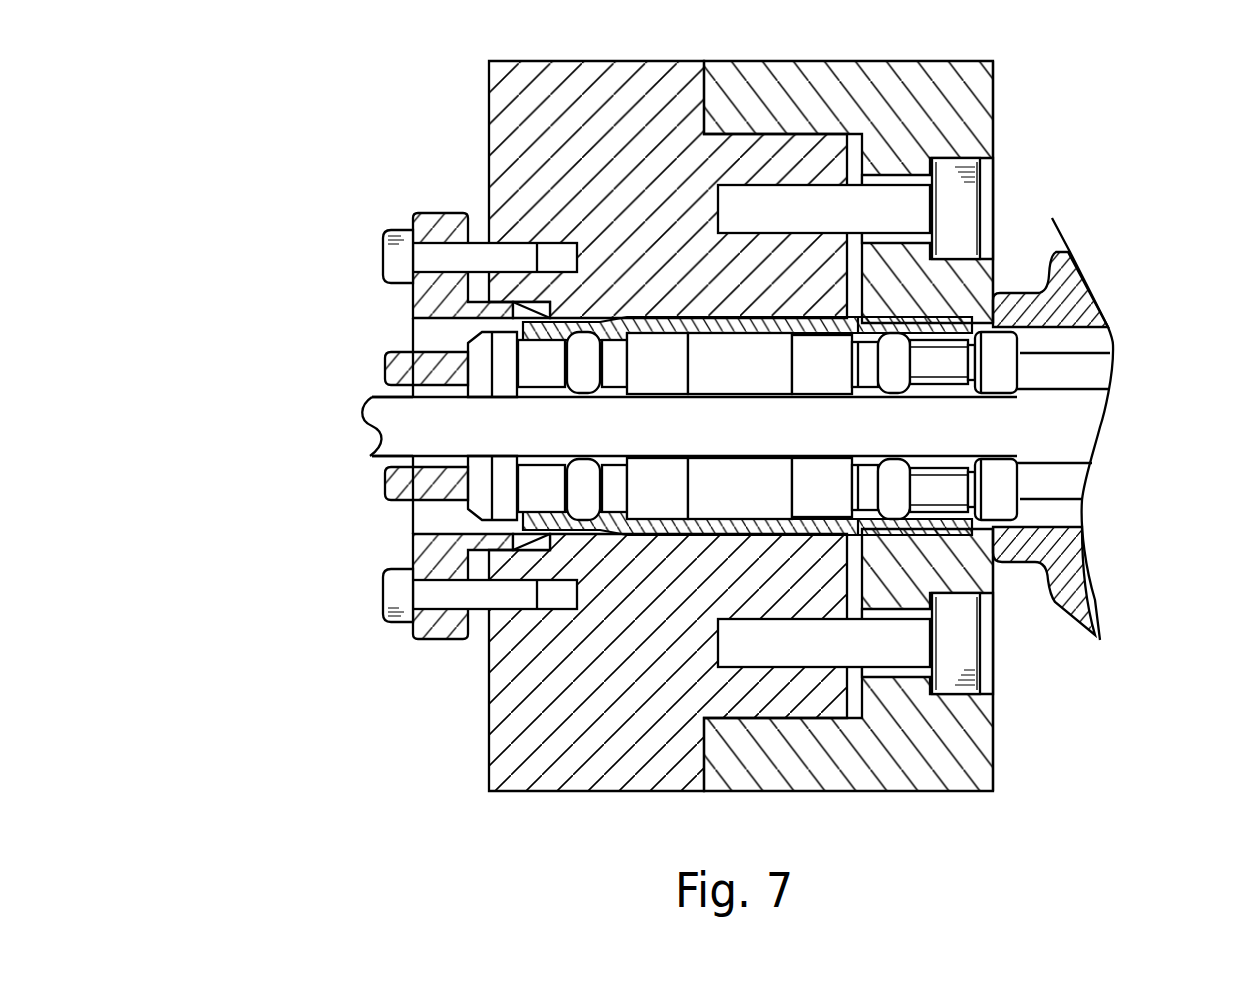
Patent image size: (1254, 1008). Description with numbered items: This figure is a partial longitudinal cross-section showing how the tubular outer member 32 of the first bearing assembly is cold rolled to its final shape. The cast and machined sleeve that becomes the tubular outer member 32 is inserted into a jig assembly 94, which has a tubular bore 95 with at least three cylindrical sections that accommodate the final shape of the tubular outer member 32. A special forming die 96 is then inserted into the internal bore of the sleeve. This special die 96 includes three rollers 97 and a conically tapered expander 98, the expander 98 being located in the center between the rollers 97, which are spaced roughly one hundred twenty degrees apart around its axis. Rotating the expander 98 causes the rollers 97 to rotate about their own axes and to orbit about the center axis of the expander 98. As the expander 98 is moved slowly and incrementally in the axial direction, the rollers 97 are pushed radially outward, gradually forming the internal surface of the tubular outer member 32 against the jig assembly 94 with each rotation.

The jig assembly 94 is at (996, 130).
The tubular bore 95 is at (800, 336).
The special forming die 96 is at (1099, 428).
The rollers 97 is at (480, 345).
The conically tapered expander 98 is at (365, 410).
The tubular outer member 32 is at (752, 338).